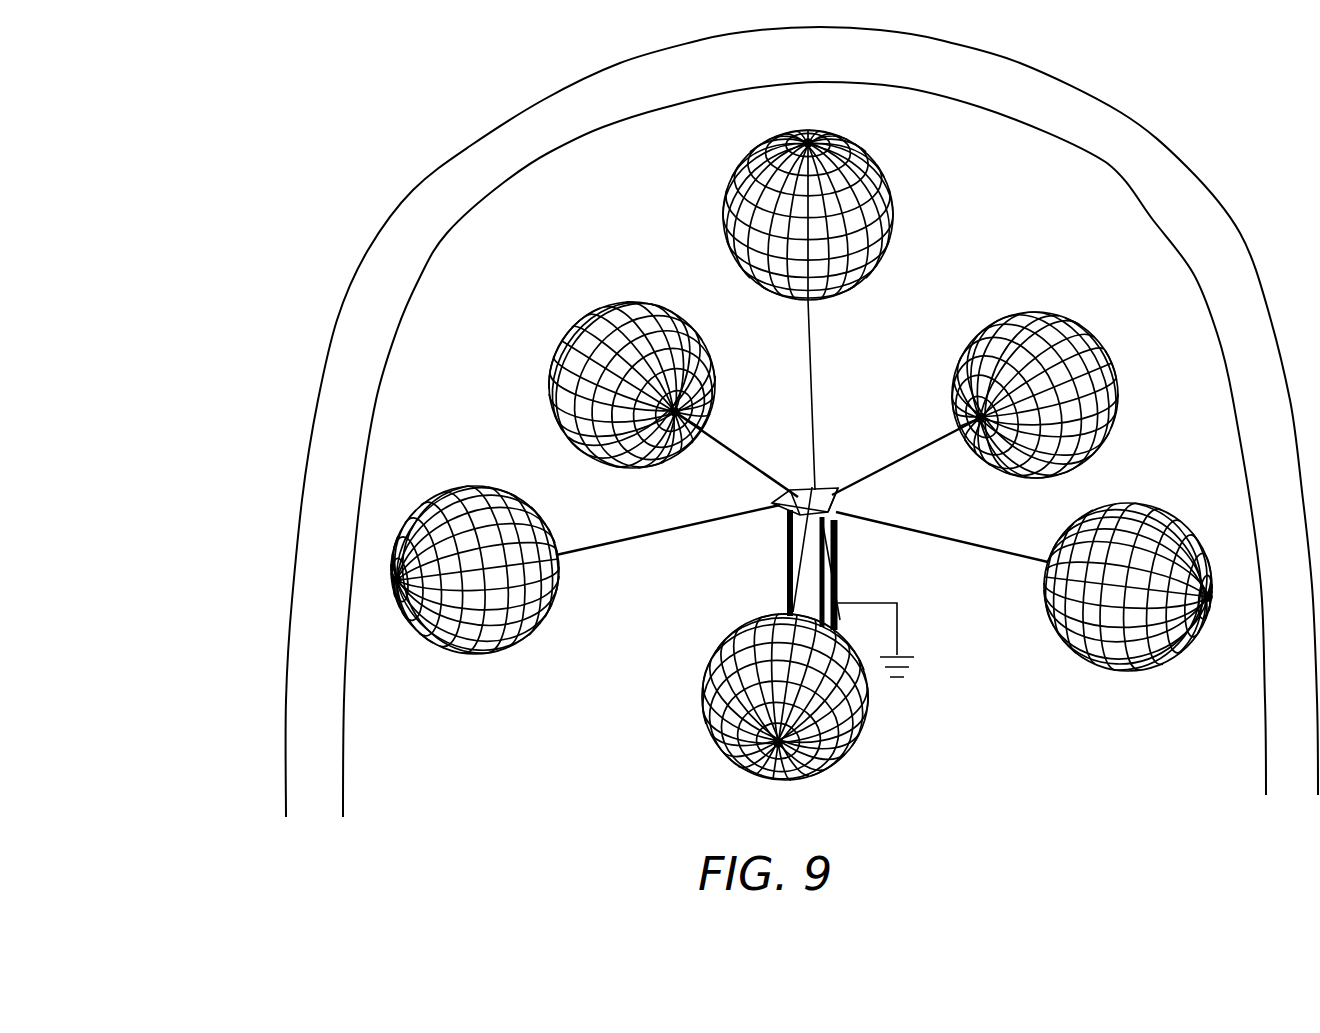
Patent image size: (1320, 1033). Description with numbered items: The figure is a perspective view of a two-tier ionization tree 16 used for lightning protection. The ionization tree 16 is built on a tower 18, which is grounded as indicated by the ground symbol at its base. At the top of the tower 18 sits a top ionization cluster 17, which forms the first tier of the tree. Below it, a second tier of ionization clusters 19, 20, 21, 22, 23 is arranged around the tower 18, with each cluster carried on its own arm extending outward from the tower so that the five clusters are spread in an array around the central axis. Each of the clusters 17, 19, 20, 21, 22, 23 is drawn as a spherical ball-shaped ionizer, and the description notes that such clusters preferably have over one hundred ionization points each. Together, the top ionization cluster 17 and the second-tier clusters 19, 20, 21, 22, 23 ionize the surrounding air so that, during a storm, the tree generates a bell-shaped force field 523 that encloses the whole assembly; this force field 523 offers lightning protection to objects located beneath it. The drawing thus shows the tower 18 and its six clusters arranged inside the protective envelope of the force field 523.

The ionization tree 16 is at (1008, 175).
The force field 523 is at (1155, 134).
The top ionization cluster 17 is at (728, 190).
The tower 18 is at (806, 382).
The ionization cluster 19 is at (563, 333).
The ionization cluster 20 is at (977, 333).
The ionization cluster 21 is at (1045, 622).
The ionization cluster 22 is at (701, 680).
The ionization cluster 23 is at (447, 645).